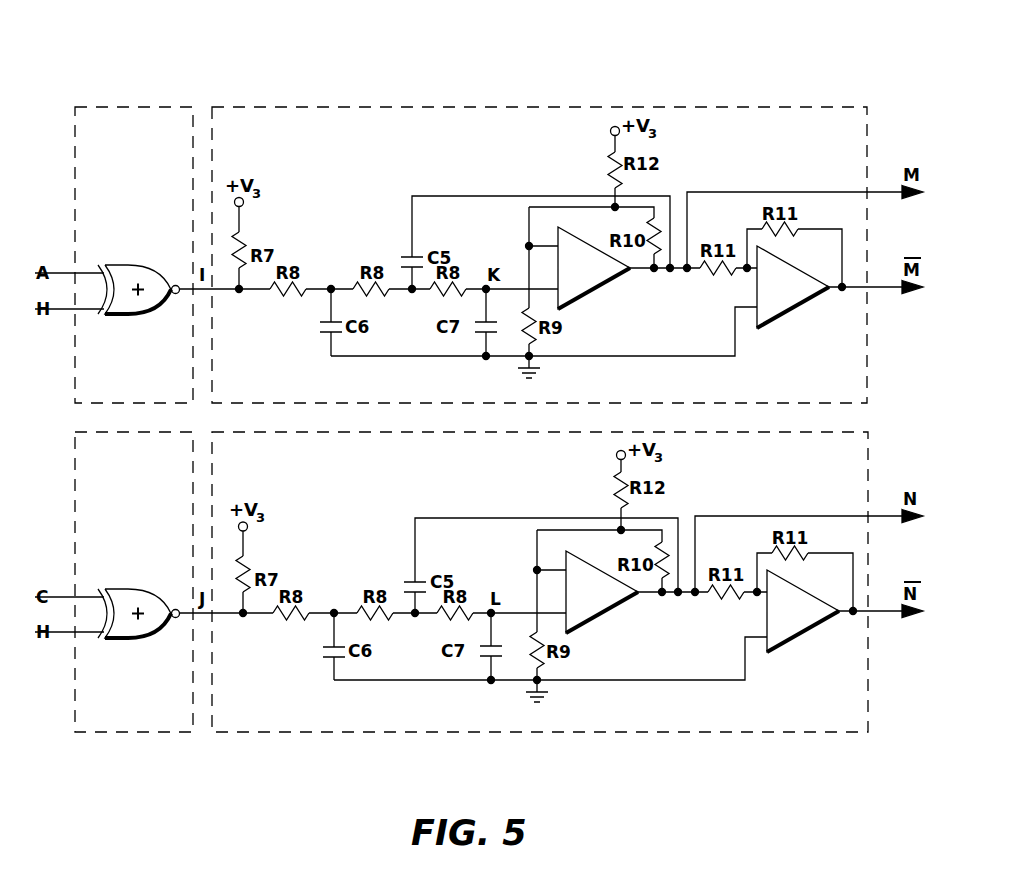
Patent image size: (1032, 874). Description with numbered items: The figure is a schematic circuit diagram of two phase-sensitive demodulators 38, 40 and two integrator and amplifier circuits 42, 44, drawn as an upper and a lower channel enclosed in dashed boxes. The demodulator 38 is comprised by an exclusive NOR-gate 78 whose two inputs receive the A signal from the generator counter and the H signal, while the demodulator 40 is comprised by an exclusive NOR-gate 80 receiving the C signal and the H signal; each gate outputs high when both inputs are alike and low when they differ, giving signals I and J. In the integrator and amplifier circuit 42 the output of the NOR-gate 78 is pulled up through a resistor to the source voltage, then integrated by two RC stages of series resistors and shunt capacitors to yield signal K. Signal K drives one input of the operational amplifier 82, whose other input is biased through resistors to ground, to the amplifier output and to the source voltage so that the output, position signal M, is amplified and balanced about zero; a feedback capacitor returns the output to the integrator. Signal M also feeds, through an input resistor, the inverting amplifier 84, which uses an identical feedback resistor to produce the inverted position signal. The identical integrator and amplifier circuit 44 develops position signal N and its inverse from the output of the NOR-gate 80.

The demodulator 38 is at (136, 106).
The demodulator 40 is at (112, 731).
The integrator and amplifier circuit 42 is at (455, 106).
The integrator and amplifier circuit 44 is at (570, 733).
The exclusive NOR-gate 78 is at (130, 267).
The exclusive NOR-gate 80 is at (130, 591).
The operational amplifier 82 is at (598, 285).
The inverting amplifier 84 is at (798, 300).